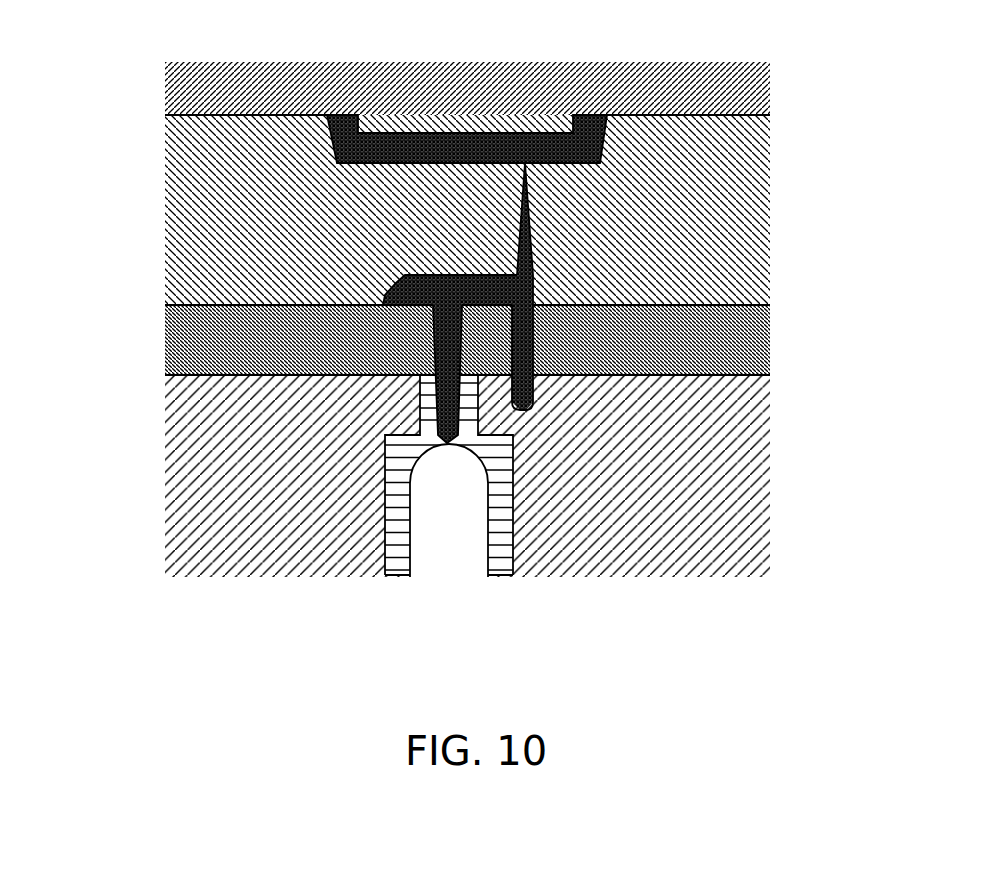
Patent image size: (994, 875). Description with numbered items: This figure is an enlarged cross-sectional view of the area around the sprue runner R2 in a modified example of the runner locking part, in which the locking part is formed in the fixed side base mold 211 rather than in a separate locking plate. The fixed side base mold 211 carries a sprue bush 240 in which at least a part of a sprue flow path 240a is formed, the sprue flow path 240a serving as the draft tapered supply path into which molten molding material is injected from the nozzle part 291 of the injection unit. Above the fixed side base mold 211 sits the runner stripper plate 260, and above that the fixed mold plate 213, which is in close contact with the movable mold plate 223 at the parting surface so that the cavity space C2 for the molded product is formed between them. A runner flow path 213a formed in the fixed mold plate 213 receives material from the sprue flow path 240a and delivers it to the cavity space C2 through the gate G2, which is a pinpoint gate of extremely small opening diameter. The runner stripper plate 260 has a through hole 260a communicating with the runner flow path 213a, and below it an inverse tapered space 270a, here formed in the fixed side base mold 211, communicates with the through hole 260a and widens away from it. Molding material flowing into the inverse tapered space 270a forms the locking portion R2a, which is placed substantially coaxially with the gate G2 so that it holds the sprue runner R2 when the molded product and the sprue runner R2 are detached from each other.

The movable mold plate 223 is at (190, 93).
The fixed mold plate 213 is at (190, 208).
The runner flow path 213a is at (536, 281).
The runner stripper plate 260 is at (165, 335).
The through hole 260a is at (540, 337).
The fixed side base mold 211 is at (175, 467).
The cavity space C2 is at (392, 134).
The sprue runner R2 is at (458, 298).
The locking portion R2a is at (527, 410).
The gate G2 is at (526, 172).
The sprue bush 240 is at (498, 565).
The sprue flow path 240a is at (330, 432).
The nozzle part 291 is at (452, 555).
The inverse tapered space 270a is at (533, 397).